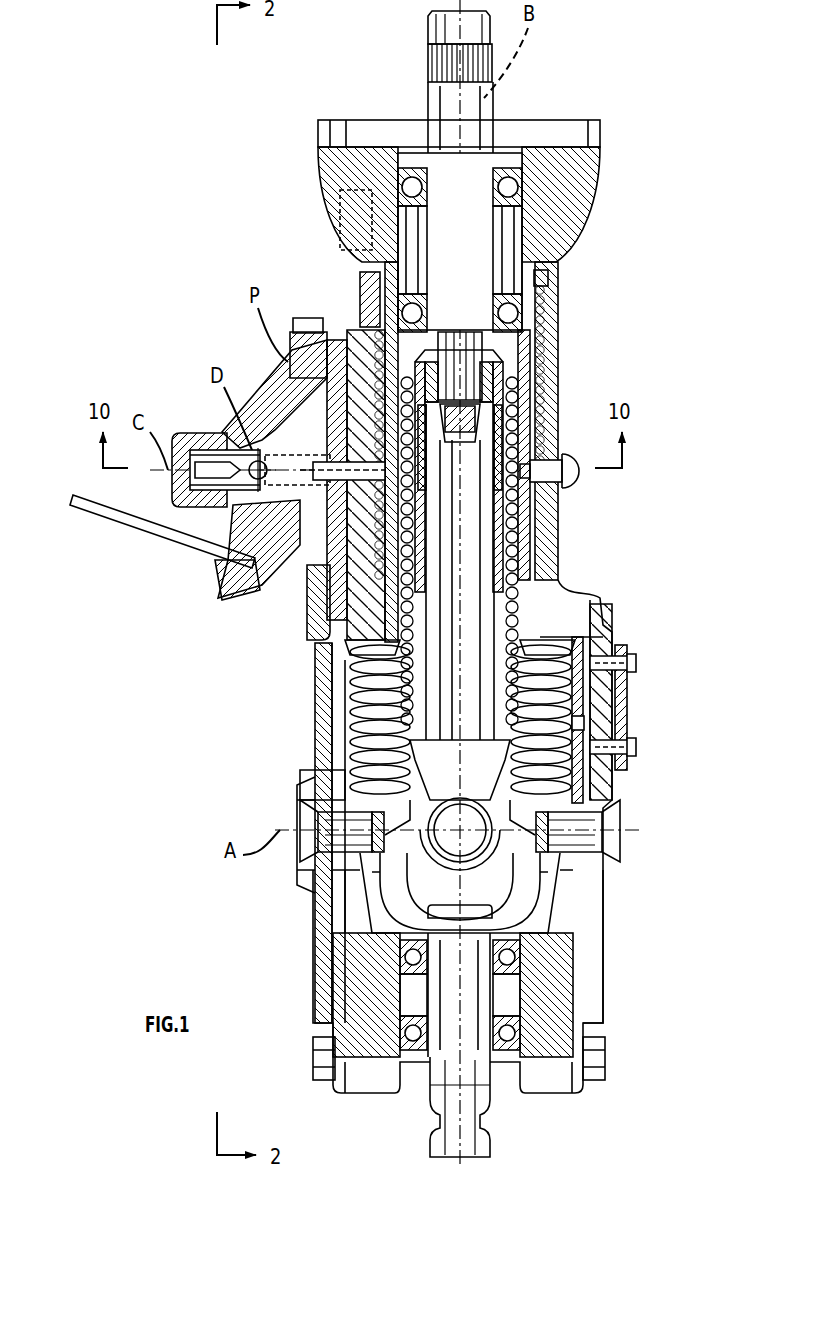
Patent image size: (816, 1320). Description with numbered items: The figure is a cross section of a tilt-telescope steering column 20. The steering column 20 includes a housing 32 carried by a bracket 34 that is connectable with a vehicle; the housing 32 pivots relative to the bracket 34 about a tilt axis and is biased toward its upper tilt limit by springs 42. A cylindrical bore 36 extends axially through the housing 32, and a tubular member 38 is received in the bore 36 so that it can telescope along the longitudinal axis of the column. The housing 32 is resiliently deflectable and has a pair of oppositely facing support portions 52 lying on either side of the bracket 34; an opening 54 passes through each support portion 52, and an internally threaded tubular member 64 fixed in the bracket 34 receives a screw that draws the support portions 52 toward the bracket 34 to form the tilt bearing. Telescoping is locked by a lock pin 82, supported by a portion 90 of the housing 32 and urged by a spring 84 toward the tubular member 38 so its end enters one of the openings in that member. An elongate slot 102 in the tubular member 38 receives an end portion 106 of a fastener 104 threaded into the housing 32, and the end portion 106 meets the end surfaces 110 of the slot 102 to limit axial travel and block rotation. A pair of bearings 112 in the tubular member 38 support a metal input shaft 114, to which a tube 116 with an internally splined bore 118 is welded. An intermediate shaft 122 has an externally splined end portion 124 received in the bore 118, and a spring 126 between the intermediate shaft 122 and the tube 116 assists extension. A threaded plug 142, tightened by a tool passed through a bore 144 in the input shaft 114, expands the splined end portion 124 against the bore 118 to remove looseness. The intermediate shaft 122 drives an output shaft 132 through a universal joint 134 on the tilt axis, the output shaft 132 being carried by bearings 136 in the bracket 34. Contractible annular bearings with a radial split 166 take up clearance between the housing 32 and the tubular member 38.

The tilt-telescope steering column 20 is at (230, 141).
The housing 32 is at (563, 300).
The bracket 34 is at (590, 985).
The cylindrical bore 36 is at (530, 266).
The tubular member 38 is at (533, 250).
The springs 42 is at (352, 742).
The support portions 52 is at (310, 790).
The opening 54 is at (298, 838).
The internally threaded tubular member 64 is at (347, 807).
The lock pin 82 is at (300, 565).
The spring 84 is at (198, 455).
The portion of the housing 90 is at (256, 405).
The elongate slot 102 is at (523, 535).
The fastener 104 is at (572, 482).
The end portion 106 is at (560, 455).
The end surfaces 110 is at (518, 458).
The bearings 112 is at (524, 300).
The input shaft 114 is at (482, 128).
The tube 116 is at (497, 413).
The internally splined bore 118 is at (505, 592).
The intermediate shaft 122 is at (473, 570).
The externally splined end portion 124 is at (513, 437).
The spring 126 is at (545, 362).
The output shaft 132 is at (490, 1126).
The universal joint 134 is at (492, 874).
The bearings 136 is at (522, 958).
The threaded plug 142 is at (513, 377).
The bore 144 is at (470, 365).
The radial split 166 is at (348, 328).